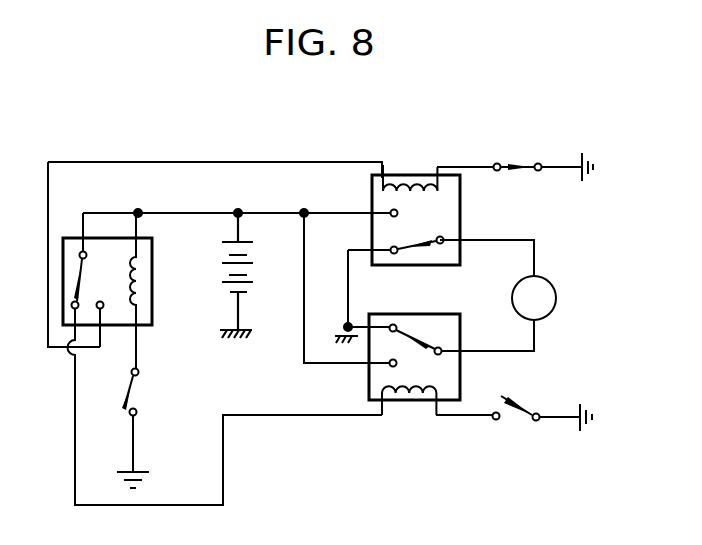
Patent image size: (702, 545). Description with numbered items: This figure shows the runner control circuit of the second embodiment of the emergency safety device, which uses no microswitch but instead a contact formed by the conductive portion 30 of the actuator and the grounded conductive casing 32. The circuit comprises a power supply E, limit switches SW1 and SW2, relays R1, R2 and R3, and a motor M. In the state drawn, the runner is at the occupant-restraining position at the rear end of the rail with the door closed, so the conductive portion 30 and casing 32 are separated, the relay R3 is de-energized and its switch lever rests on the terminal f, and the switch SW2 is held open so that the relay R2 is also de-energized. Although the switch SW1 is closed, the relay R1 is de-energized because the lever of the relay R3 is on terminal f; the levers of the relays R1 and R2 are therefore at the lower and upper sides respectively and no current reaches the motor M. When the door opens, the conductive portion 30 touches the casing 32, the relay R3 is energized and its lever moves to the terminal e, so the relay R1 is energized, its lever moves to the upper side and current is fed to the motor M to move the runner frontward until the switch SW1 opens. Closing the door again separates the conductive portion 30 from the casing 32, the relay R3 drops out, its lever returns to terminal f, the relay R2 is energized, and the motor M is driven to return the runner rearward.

The relay R1 is at (407, 172).
The relay R2 is at (413, 402).
The relay R3 is at (72, 237).
The limit switch SW1 is at (525, 172).
The limit switch SW2 is at (527, 407).
The power supply E is at (242, 294).
The motor M is at (497, 295).
The conductive portion 30 is at (130, 382).
The casing 32 is at (128, 420).
The terminal f is at (83, 305).
The terminal e is at (109, 305).